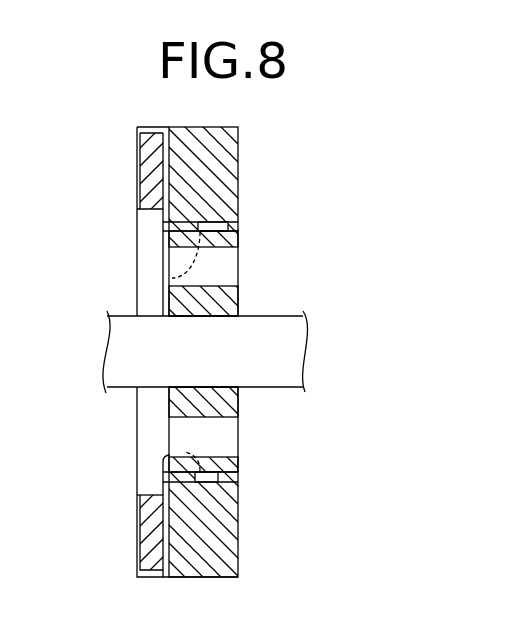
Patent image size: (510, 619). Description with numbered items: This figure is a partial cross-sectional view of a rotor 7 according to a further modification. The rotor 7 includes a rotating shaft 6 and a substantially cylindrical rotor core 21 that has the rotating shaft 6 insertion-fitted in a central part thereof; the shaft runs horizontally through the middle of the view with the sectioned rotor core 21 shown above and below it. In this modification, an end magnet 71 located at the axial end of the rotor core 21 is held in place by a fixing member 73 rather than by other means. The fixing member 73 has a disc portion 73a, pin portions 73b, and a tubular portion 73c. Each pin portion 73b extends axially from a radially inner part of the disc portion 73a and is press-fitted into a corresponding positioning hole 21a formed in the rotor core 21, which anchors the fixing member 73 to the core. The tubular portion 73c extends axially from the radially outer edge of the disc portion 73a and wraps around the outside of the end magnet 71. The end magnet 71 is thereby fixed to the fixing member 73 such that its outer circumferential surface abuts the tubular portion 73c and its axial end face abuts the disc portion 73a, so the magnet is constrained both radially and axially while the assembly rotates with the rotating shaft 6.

The rotating shaft 6 is at (302, 343).
The rotor 7 is at (238, 158).
The rotor core 21 is at (215, 306).
The positioning holes 21a is at (237, 240).
The end magnet 71 is at (152, 170).
The fixing member 73 is at (150, 218).
The disc portion 73a is at (160, 232).
The pin portions 73b is at (172, 278).
The tubular portion 73c is at (153, 127).